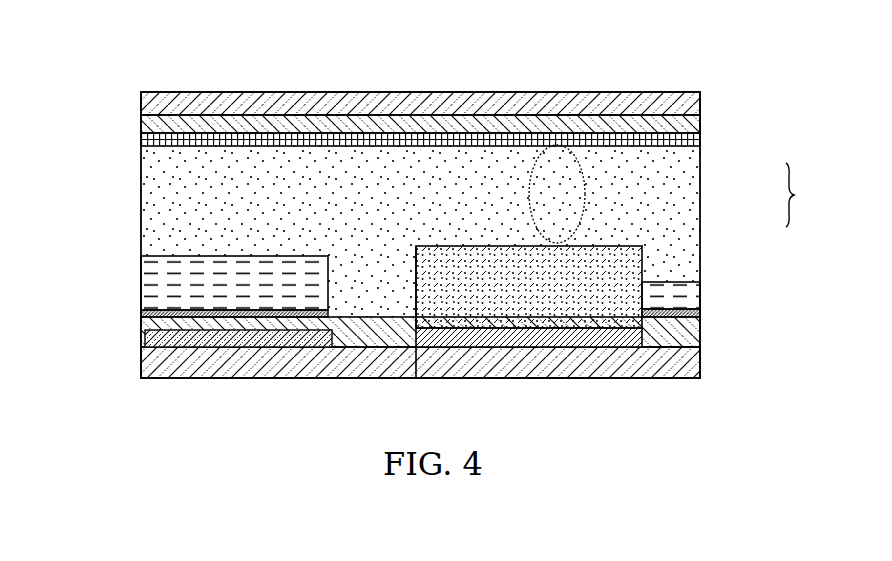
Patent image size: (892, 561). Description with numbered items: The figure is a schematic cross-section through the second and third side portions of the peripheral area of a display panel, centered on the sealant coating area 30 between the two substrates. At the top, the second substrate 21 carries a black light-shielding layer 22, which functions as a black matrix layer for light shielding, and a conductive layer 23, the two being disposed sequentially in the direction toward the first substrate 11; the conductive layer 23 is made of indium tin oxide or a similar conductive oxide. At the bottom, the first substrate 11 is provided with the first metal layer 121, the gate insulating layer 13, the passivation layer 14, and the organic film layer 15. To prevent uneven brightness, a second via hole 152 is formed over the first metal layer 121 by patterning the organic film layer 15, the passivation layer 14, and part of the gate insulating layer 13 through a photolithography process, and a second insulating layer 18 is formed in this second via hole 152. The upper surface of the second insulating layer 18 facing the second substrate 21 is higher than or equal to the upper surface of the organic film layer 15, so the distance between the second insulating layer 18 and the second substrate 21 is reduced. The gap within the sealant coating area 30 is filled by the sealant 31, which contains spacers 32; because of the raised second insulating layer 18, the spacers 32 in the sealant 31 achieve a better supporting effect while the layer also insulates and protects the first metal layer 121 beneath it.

The first substrate 11 is at (141, 361).
The first metal layer 121 is at (700, 356).
The gate insulating layer 13 is at (141, 324).
The passivation layer 14 is at (141, 309).
The organic film layer 15 is at (141, 257).
The second via hole 152 is at (406, 266).
The second insulating layer 18 is at (440, 246).
The second substrate 21 is at (141, 93).
The black light-shielding layer 22 is at (141, 119).
The conductive layer 23 is at (141, 141).
The sealant coating area 30 is at (802, 195).
The sealant 31 is at (700, 225).
The spacer 32 is at (585, 178).